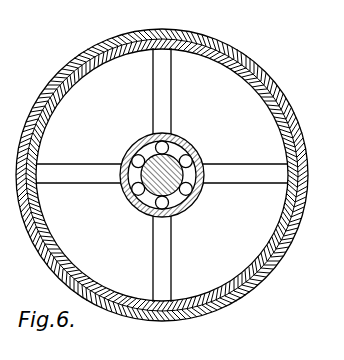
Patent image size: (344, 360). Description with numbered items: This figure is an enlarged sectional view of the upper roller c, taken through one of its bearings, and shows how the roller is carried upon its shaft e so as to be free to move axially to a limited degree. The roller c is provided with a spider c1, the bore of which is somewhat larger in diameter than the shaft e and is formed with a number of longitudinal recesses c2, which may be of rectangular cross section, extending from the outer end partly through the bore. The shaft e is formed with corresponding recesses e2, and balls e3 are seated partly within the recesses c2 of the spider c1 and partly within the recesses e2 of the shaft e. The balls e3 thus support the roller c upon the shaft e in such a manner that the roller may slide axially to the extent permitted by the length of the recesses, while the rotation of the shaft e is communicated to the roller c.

The upper roller c is at (47, 101).
The spider c1 is at (252, 153).
The longitudinal recesses c2 is at (123, 195).
The balls e is at (183, 155).
The shaft recesses e2 is at (189, 208).
The balls e3 is at (201, 192).